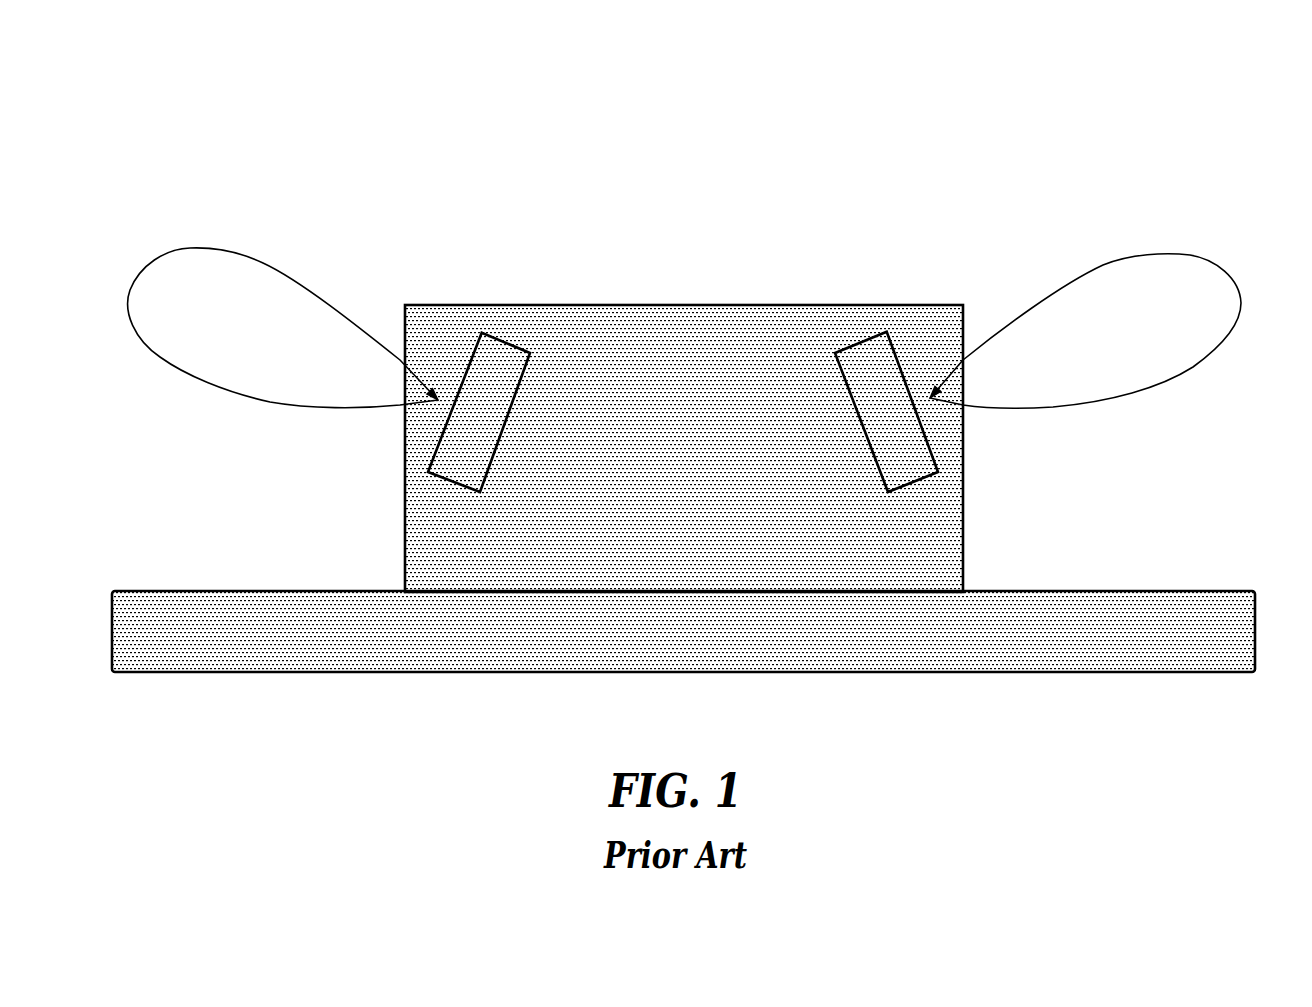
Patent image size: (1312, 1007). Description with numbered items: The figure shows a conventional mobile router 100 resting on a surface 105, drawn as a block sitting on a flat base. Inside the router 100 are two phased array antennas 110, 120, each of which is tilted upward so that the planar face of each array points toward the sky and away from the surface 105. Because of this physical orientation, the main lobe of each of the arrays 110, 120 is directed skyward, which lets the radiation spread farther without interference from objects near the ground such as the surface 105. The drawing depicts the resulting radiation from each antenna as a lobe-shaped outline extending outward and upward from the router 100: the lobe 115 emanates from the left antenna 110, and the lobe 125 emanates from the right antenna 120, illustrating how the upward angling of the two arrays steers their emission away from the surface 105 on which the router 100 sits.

The mobile router 100 is at (1192, 66).
The surface 105 is at (315, 682).
The phased array antenna 110 is at (498, 337).
The first beam field 115 is at (180, 248).
The phased array antenna 120 is at (855, 348).
The second beam field 125 is at (1163, 255).